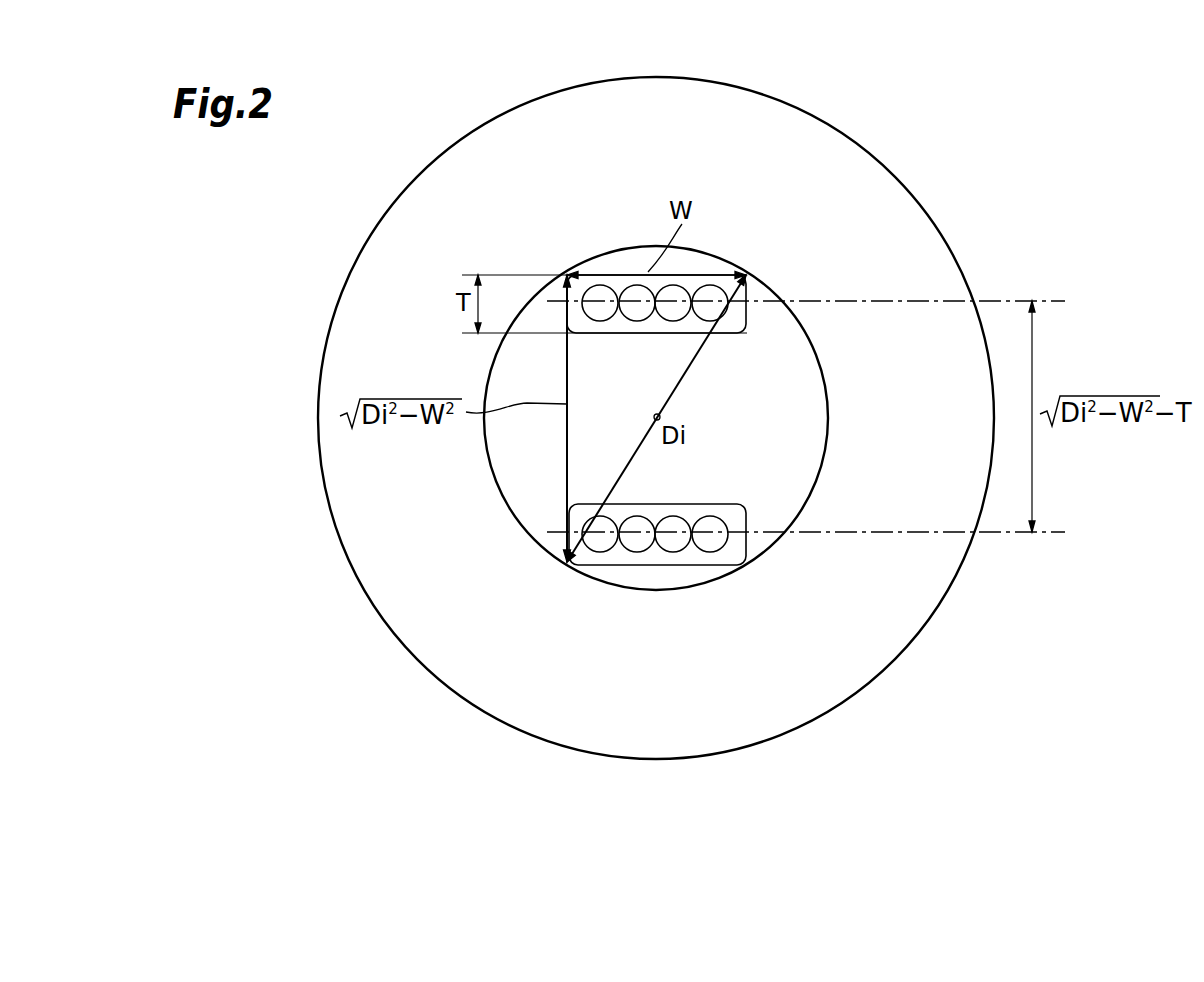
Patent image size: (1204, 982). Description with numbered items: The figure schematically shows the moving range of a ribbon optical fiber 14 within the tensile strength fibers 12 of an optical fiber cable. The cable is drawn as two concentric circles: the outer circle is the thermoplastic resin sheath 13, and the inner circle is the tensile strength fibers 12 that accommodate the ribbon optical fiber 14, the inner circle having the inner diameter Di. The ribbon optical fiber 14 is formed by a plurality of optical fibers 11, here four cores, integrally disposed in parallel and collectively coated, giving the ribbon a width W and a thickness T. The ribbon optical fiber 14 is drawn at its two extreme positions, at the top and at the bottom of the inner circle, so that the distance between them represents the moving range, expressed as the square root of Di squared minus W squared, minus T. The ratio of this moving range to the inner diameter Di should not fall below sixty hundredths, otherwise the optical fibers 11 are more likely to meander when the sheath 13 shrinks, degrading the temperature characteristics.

The optical fibers 11 is at (642, 545).
The tensile strength fibers 12 is at (522, 472).
The thermoplastic resin sheath 13 is at (853, 170).
The ribbon optical fiber 14 is at (737, 547).